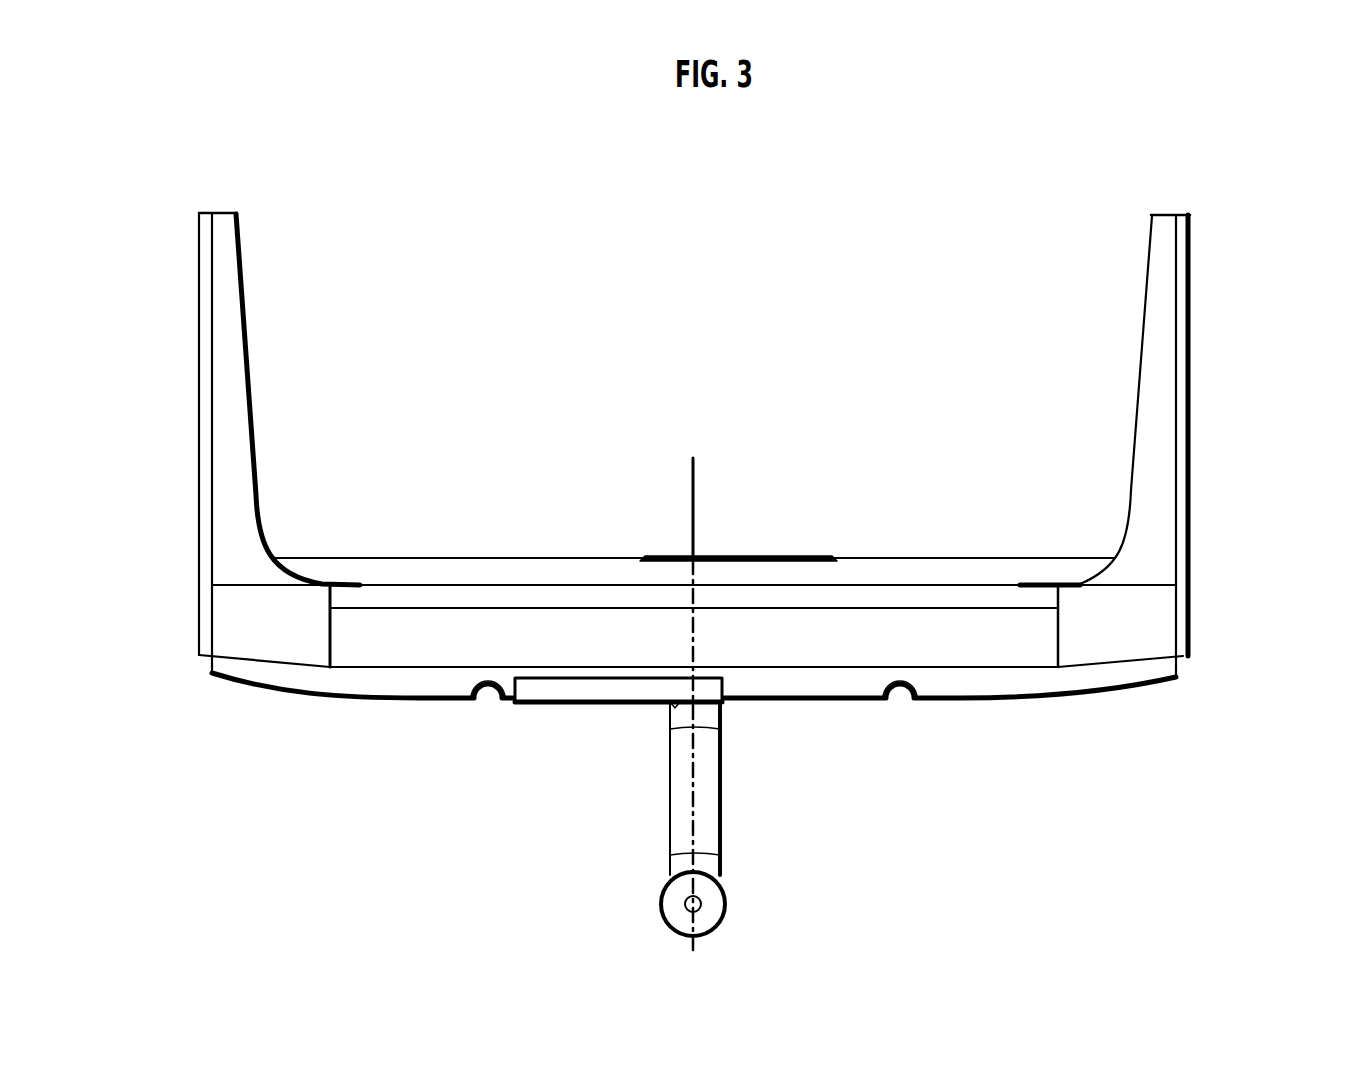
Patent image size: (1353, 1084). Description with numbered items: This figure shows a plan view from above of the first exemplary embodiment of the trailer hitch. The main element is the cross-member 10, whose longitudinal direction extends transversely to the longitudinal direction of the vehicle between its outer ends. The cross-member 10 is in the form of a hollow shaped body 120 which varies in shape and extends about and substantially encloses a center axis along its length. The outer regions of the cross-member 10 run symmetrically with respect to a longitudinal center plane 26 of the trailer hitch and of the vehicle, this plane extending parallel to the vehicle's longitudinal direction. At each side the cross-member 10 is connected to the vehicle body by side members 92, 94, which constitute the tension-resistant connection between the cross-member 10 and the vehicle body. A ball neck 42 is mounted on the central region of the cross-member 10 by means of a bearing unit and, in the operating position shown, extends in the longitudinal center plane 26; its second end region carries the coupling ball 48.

The cross-member 10 is at (948, 647).
The hollow shaped body 120 is at (778, 647).
The side member 92 is at (233, 402).
The side member 94 is at (1155, 410).
The longitudinal center plane 26 is at (697, 500).
The ball neck 42 is at (648, 794).
The coupling ball 48 is at (705, 903).